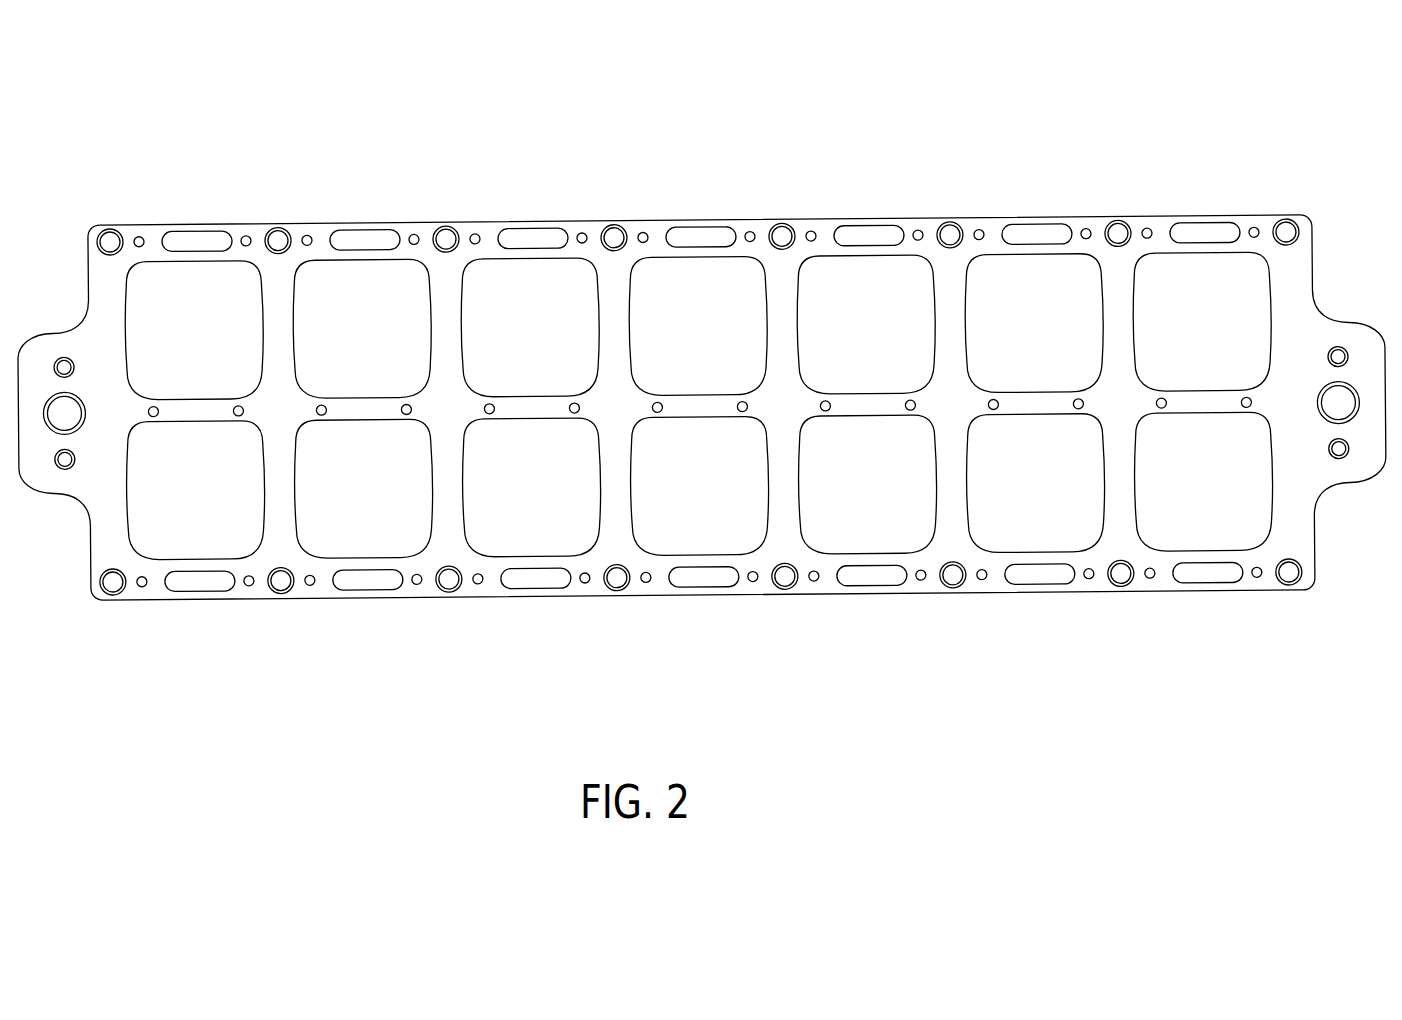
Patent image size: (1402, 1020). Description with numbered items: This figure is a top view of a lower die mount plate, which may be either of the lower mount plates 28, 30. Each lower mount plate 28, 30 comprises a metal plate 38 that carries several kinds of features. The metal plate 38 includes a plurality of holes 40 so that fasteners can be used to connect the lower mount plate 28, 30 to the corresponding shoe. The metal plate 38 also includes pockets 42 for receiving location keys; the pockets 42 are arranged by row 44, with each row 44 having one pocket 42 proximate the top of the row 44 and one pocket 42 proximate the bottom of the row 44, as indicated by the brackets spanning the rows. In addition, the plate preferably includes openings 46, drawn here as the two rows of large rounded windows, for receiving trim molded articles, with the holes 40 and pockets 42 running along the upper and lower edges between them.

The lower mount plate 28 is at (649, 622).
The lower mount plate 30 is at (702, 400).
The metal plate 38 is at (652, 221).
The holes 40 is at (278, 238).
The pockets 42 is at (201, 233).
The row 44 is at (255, 145).
The openings 46 is at (260, 335).